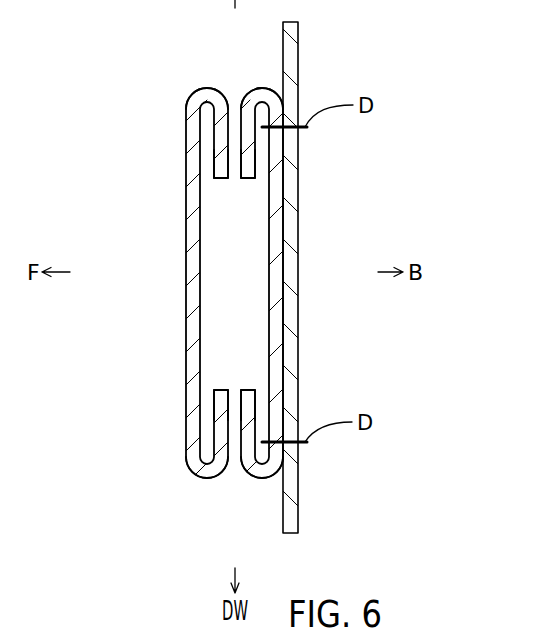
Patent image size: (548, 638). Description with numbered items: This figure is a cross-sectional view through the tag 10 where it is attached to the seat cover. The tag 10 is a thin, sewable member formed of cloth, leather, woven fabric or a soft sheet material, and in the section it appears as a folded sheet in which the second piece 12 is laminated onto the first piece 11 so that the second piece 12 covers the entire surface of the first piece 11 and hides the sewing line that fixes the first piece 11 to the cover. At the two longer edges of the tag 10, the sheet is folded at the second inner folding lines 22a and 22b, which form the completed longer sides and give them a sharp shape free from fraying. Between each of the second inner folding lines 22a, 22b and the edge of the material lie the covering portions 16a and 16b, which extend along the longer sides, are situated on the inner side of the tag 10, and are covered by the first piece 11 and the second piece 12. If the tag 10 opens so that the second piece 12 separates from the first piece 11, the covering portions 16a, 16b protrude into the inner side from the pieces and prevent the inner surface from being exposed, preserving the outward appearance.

The tag 10 is at (274, 290).
The first piece 11 is at (276, 293).
The second piece 12 is at (195, 240).
The covering portion 16a is at (247, 178).
The covering portion 16b is at (213, 403).
The second inner folding line 22a is at (262, 98).
The second inner folding line 22b is at (260, 476).